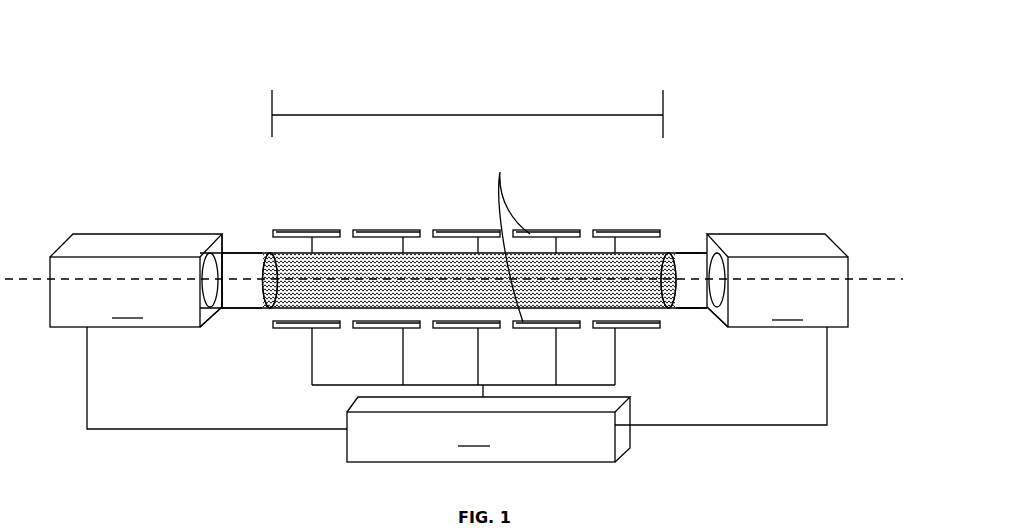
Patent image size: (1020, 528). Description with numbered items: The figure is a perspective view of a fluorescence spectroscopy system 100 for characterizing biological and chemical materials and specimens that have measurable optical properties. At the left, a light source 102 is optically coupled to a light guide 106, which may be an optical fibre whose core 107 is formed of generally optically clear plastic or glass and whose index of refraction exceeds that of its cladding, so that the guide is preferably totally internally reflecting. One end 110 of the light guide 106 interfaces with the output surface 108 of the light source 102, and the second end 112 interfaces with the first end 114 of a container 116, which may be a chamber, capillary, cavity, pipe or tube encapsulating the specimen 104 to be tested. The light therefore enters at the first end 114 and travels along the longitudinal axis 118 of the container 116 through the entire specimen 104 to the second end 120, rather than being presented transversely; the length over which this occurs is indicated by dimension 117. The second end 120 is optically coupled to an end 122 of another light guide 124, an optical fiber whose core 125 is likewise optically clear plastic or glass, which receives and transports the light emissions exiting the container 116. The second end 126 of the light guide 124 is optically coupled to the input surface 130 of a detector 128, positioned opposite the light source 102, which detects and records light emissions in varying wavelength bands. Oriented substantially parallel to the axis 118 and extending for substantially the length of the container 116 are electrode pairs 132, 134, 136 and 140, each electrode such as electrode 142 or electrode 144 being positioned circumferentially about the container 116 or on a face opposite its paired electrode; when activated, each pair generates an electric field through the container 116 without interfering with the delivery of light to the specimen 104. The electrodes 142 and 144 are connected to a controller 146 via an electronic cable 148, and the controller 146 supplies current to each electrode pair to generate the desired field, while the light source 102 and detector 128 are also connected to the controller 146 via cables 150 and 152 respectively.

The fluorescence spectroscopy system 100 is at (724, 127).
The light source 102 is at (136, 280).
The specimen 104 is at (347, 312).
The light guide 106 is at (213, 292).
The core 107 is at (227, 290).
The output surface 108 is at (207, 312).
The one end of light guide 110 is at (222, 307).
The second end of light guide 112 is at (270, 258).
The first end of container 114 is at (240, 268).
The container 116 is at (352, 292).
The electrode region length 117 is at (467, 114).
The longitudinal axis 118 is at (870, 278).
The second end of container 120 is at (680, 310).
The end of light guide 122 is at (689, 308).
The light guide 124 is at (683, 263).
The core 125 is at (690, 262).
The second end of light guide 126 is at (717, 270).
The detector 128 is at (777, 280).
The input surface 130 is at (725, 312).
The electrode pair 132 is at (300, 322).
The electrode pair 134 is at (393, 322).
The electrode pair 136 is at (460, 322).
The electrode pair 140 is at (622, 322).
The electrode 142 is at (543, 326).
The electrode 144 is at (554, 231).
The controller 146 is at (488, 429).
The electronic cable 148 is at (562, 384).
The cable 150 is at (178, 430).
The cable 152 is at (720, 426).